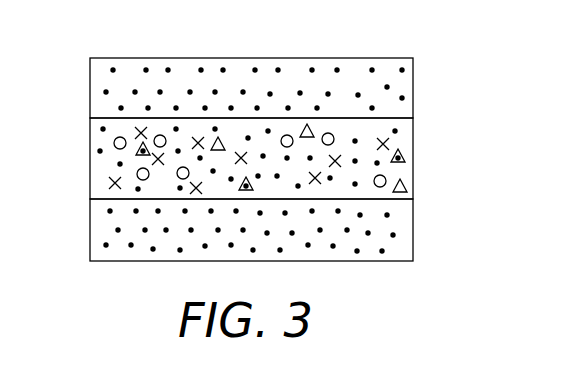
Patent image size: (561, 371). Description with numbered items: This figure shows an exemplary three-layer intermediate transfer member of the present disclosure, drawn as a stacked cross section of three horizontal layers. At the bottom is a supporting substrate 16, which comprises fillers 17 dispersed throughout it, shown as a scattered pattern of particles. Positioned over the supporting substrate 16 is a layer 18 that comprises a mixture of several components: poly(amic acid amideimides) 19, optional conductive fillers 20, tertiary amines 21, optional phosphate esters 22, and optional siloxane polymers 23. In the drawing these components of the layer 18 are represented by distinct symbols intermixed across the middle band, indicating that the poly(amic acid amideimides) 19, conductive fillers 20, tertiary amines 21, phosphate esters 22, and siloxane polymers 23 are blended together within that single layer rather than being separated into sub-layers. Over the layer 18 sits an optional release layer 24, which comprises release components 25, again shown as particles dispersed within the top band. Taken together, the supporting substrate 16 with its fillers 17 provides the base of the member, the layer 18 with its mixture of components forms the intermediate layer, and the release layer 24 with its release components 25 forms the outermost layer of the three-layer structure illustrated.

The supporting substrate 16 is at (88, 227).
The fillers 17 is at (153, 250).
The layer 18 is at (88, 167).
The poly(amic acid amideimides) 19 is at (327, 133).
The conductive fillers 20 is at (108, 183).
The tertiary amines 21 is at (98, 152).
The phosphate esters 22 is at (403, 151).
The siloxane polymers 23 is at (403, 187).
The release layer 24 is at (413, 85).
The release components 25 is at (145, 68).